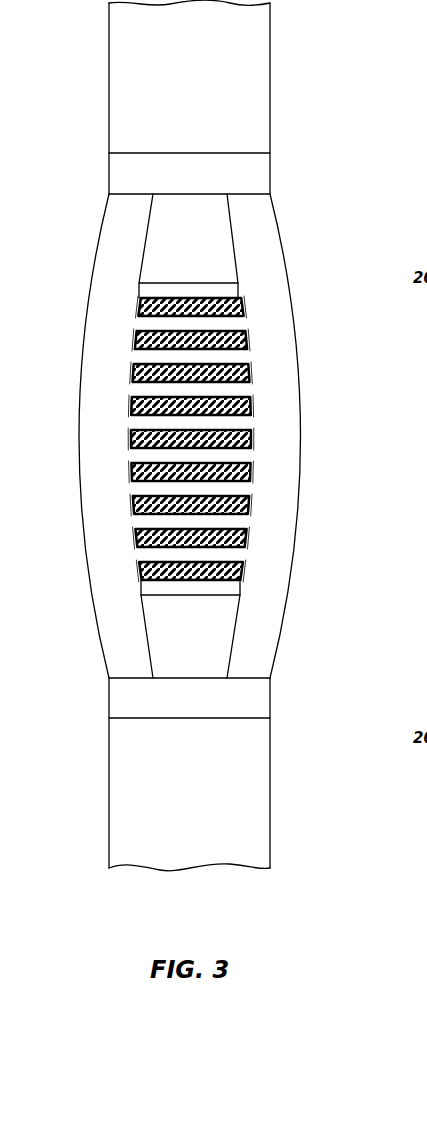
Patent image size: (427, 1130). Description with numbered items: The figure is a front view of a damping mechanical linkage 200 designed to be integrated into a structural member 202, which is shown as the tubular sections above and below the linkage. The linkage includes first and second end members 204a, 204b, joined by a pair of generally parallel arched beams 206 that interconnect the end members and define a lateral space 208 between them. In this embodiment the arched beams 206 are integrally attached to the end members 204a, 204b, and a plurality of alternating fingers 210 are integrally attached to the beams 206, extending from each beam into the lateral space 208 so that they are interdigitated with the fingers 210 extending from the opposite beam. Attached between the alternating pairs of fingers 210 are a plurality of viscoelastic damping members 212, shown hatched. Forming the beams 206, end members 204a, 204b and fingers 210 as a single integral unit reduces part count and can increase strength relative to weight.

The damping mechanical linkage 200 is at (201, 435).
The structural member 202 is at (125, 52).
The first end member 204a is at (258, 163).
The second end member 204b is at (255, 688).
The arched beam 206 is at (100, 374).
The lateral space 208 is at (197, 268).
The finger 210 is at (173, 388).
The viscoelastic damping member 212 is at (243, 512).